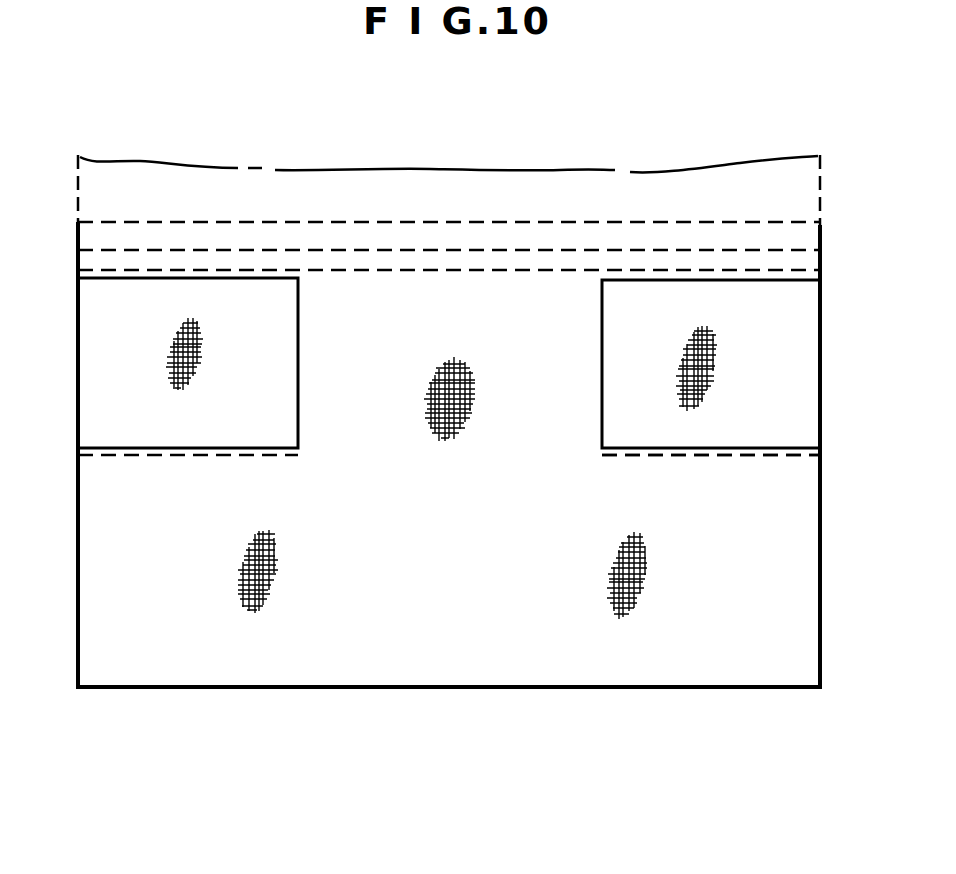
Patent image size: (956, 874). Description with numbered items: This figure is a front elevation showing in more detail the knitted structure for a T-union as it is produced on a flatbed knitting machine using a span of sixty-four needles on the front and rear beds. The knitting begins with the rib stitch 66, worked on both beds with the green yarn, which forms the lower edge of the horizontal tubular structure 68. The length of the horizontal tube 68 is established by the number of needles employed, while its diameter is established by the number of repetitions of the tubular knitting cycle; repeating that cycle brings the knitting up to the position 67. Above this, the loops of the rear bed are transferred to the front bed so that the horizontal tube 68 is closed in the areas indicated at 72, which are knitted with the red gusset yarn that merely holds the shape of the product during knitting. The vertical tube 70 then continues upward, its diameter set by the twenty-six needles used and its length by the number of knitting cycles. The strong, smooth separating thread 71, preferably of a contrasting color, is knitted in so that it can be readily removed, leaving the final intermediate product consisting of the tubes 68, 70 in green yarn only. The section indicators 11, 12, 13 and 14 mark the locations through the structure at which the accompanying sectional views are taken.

The stitch 66 is at (583, 689).
The position 67 is at (781, 467).
The horizontal tubular structure 68 is at (500, 618).
The tube 70 is at (510, 340).
The separating thread 71 is at (762, 270).
The closing areas 72 is at (710, 448).
The section line 11- 11 is at (44, 623).
The section line 12- 12 is at (44, 408).
The section line 13- 13 is at (382, 126).
The section line 14- 14 is at (707, 110).